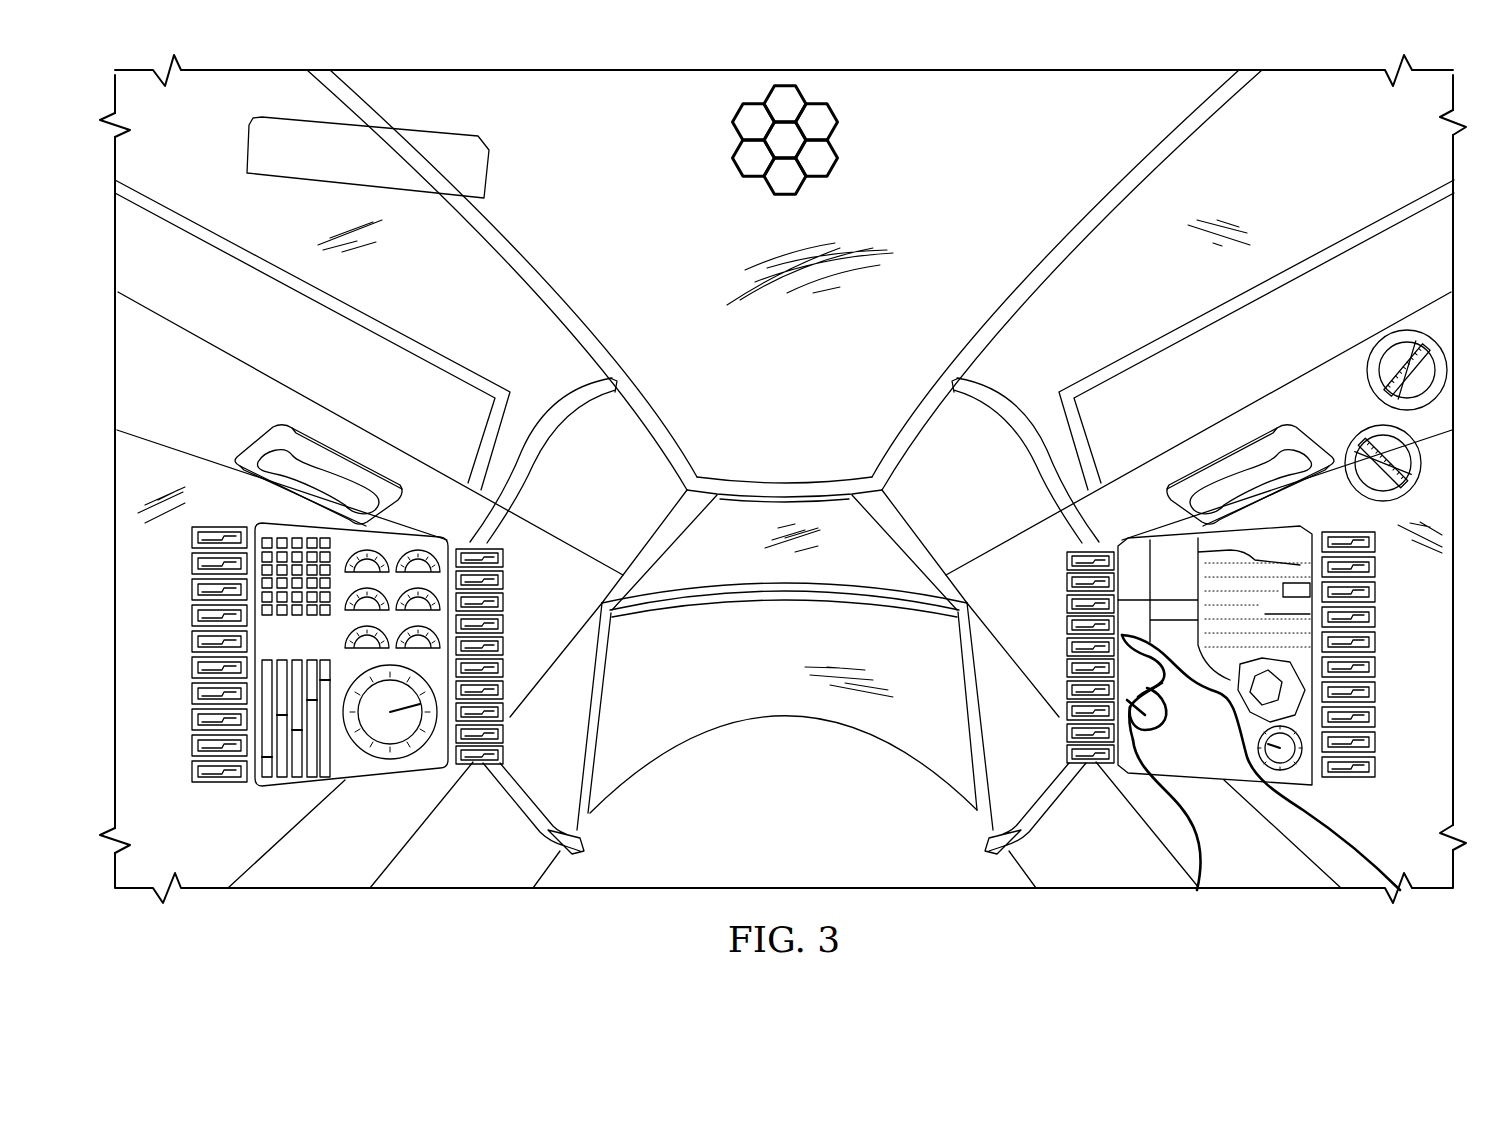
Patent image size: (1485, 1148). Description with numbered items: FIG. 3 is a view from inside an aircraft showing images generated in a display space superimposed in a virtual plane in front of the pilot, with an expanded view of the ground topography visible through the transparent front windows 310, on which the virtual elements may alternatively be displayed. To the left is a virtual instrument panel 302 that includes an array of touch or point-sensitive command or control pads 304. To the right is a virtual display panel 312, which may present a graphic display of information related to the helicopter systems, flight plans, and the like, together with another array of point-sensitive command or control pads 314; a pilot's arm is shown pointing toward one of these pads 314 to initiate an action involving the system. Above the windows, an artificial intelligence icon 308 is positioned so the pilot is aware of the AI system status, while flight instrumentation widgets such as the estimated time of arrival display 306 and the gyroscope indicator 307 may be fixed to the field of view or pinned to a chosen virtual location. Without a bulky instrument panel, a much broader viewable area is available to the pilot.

The virtual instrument panel 302 is at (362, 782).
The command or control pads 304 is at (195, 690).
The estimated time of arrival display 306 is at (247, 150).
The gyroscope indicator 307 is at (1368, 368).
The artificial intelligence icon 308 is at (740, 168).
The windows 310 is at (975, 231).
The virtual display panel 312 is at (1310, 777).
The command or control pads 314 is at (1377, 665).